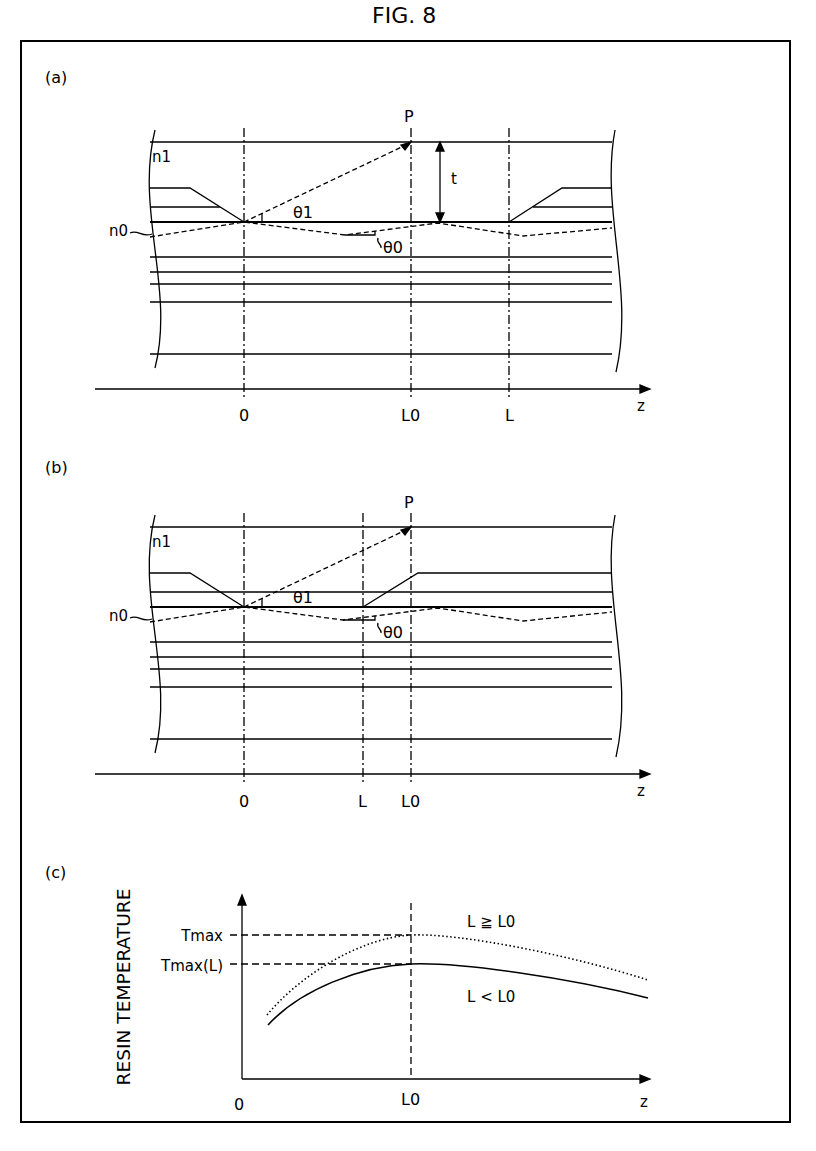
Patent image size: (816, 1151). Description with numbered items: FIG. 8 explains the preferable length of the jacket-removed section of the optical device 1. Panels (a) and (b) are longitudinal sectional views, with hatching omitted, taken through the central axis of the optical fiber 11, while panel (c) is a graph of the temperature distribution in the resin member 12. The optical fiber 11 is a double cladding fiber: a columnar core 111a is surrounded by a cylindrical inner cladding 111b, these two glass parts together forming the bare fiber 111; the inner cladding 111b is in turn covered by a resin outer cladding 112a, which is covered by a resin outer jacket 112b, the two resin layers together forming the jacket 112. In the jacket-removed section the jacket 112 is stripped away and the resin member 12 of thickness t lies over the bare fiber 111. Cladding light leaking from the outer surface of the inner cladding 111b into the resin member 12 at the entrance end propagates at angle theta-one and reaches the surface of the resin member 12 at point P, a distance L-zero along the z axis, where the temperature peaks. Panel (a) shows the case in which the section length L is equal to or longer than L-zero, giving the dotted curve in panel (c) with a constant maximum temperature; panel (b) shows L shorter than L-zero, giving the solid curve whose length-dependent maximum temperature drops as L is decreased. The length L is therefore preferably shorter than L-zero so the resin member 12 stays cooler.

The optical device 1 is at (637, 128).
The optical fiber 11 is at (293, 303).
The resin member 12 is at (325, 355).
The bare fiber 111 is at (443, 442).
The core 111a is at (608, 251).
The inner cladding 111b is at (608, 233).
The jacket 112 is at (443, 401).
The outer cladding 112a is at (608, 216).
The outer jacket 112b is at (608, 196).